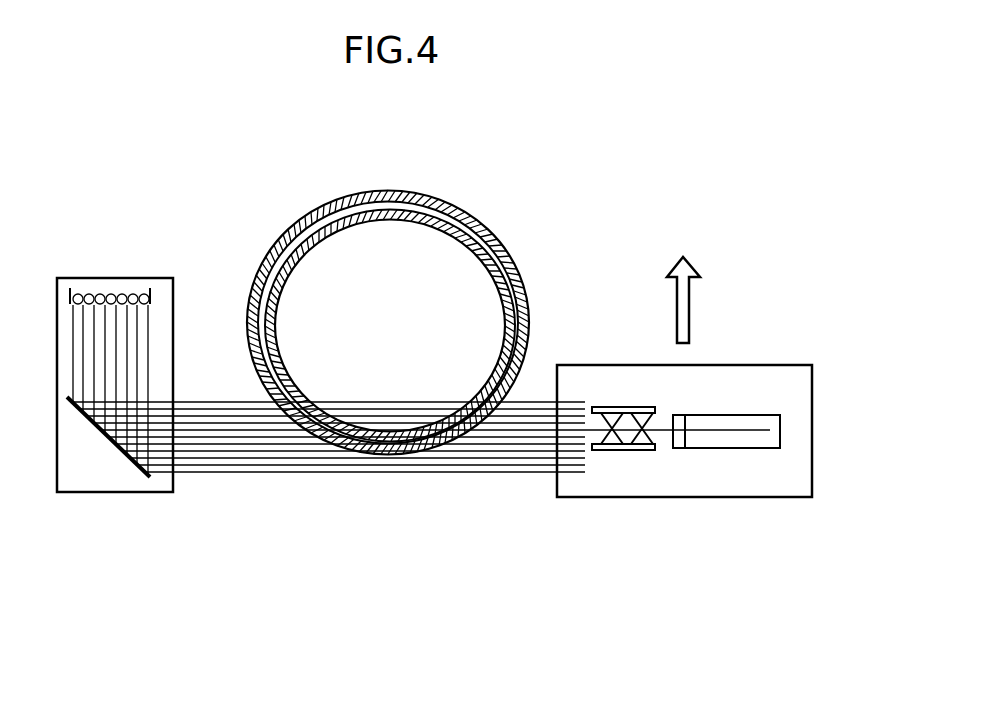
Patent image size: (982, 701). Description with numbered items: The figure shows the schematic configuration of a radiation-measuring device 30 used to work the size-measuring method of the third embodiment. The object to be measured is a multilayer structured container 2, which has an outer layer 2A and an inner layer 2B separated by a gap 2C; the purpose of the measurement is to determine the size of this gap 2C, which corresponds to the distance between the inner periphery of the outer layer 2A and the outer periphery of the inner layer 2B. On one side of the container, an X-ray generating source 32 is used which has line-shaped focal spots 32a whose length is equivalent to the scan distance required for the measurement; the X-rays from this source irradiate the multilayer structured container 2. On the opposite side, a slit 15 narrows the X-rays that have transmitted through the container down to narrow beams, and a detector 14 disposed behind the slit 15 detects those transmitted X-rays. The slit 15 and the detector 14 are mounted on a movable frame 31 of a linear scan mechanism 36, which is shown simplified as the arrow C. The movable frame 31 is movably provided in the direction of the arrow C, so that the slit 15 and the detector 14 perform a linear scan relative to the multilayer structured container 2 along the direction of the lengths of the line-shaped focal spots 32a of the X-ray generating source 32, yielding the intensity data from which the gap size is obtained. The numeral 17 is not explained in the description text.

The multilayer structured container 2 is at (426, 300).
The outer layer 2A is at (503, 248).
The gap 2C is at (513, 268).
The inner layer 2B is at (523, 294).
The detector 14 is at (713, 448).
The slit 15 is at (635, 452).
The light beam 17 is at (519, 427).
The radiation-measuring device 30 is at (328, 500).
The movable frame 31 is at (684, 464).
The X-ray generating source 32 is at (114, 422).
The line-shaped focal spots 32a is at (92, 432).
The linear scan mechanism 36 is at (689, 312).